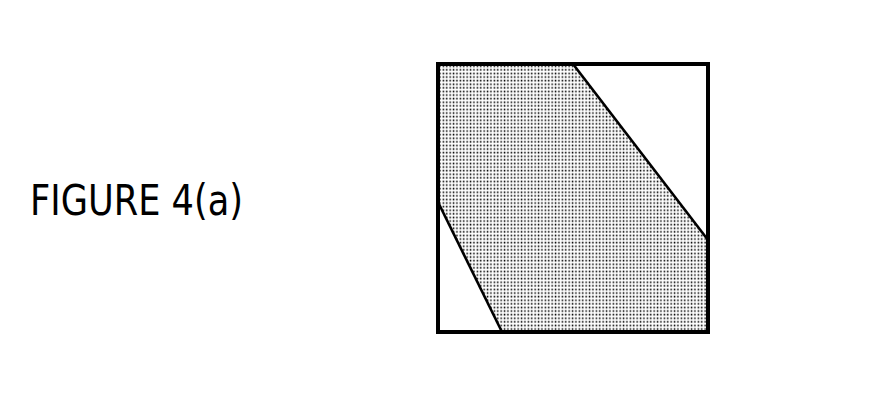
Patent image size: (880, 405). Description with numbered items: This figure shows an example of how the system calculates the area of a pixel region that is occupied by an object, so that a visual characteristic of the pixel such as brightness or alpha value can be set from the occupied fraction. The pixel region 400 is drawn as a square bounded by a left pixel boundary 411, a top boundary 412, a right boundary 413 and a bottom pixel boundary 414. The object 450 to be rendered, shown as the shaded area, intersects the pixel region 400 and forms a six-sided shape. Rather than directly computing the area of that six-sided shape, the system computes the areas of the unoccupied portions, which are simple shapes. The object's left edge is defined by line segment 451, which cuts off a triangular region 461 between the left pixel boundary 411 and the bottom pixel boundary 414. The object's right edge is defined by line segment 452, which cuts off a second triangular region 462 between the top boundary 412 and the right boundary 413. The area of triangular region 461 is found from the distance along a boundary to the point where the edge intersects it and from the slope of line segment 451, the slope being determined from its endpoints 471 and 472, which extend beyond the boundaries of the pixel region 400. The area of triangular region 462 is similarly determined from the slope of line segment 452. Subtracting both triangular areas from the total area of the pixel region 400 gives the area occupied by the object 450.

The pixel region 400 is at (713, 55).
The left pixel boundary 411 is at (438, 228).
The top boundary 412 is at (483, 63).
The right boundary 413 is at (710, 326).
The bottom pixel boundary 414 is at (652, 334).
The object 450 is at (490, 108).
The line segment 451 is at (465, 262).
The line segment 452 is at (603, 102).
The triangular region 461 is at (472, 296).
The triangular region 462 is at (665, 140).
The endpoint 471 is at (438, 202).
The endpoint 472 is at (517, 362).